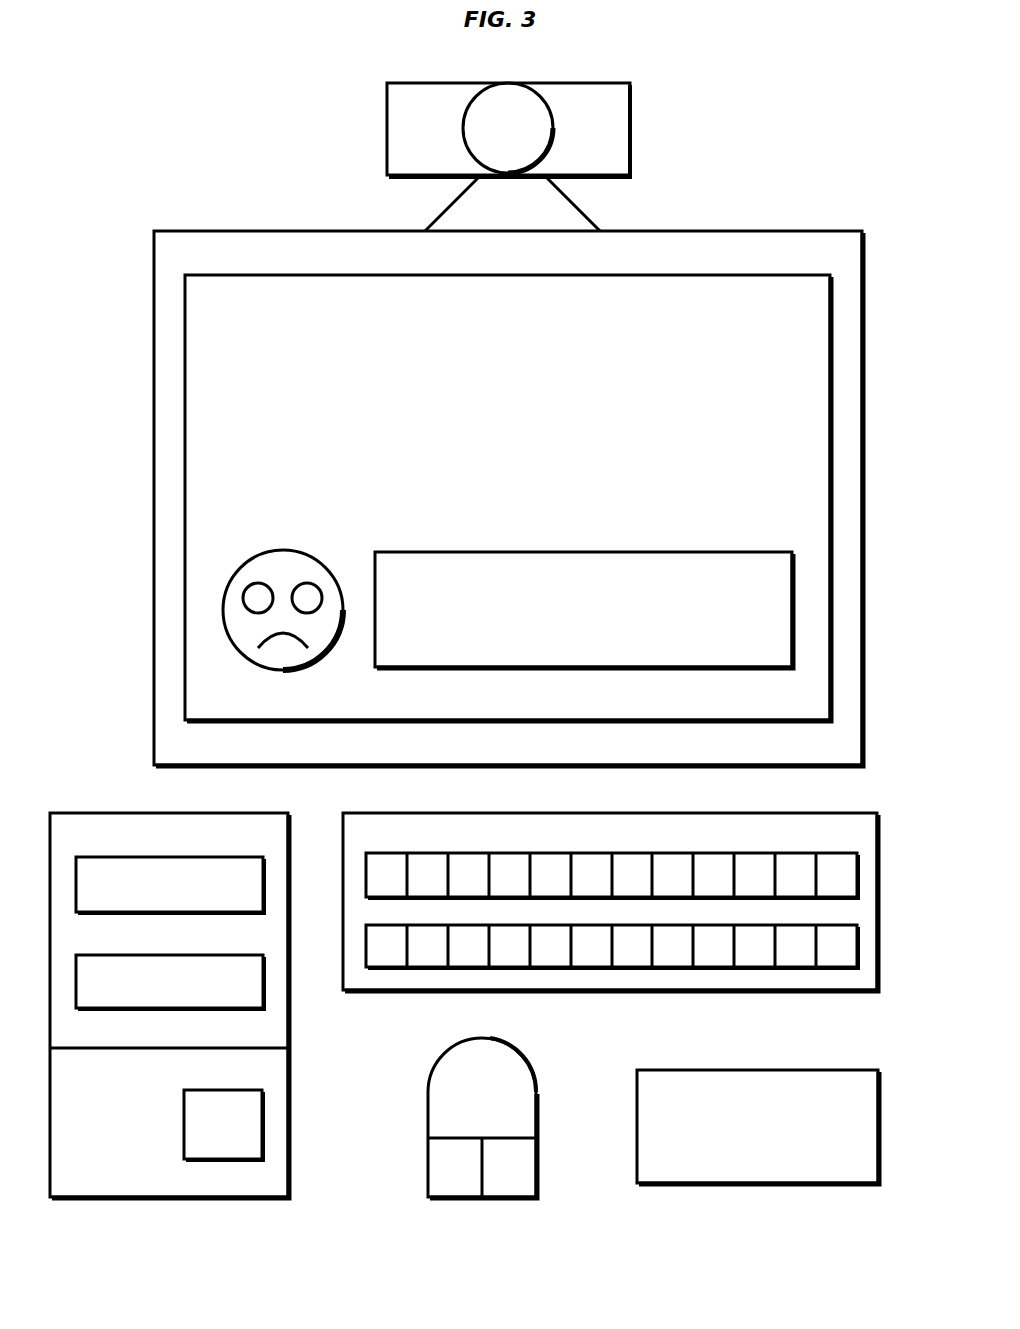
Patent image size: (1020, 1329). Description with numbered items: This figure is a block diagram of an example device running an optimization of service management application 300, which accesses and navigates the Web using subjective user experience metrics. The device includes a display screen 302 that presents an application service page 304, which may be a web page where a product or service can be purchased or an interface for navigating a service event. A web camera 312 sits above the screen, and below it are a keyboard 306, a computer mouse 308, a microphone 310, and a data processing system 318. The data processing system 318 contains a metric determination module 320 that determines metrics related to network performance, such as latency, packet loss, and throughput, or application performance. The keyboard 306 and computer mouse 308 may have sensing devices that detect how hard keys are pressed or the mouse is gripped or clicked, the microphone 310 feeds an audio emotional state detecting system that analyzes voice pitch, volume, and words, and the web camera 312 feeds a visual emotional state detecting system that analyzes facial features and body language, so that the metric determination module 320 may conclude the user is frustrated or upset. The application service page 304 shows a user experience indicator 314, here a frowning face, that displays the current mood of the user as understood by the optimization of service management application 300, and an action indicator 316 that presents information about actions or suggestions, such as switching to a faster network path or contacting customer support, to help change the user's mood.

The optimization of service management application 300 is at (738, 152).
The display screen 302 is at (508, 498).
The application service page 304 is at (508, 498).
The keyboard 306 is at (610, 902).
The computer mouse 308 is at (482, 1118).
The microphone 310 is at (758, 1127).
The web camera 312 is at (387, 135).
The user experience indicator 314 is at (223, 611).
The action indicator 316 is at (584, 610).
The data processing system 318 is at (169, 1005).
The metric determination module 320 is at (223, 1125).